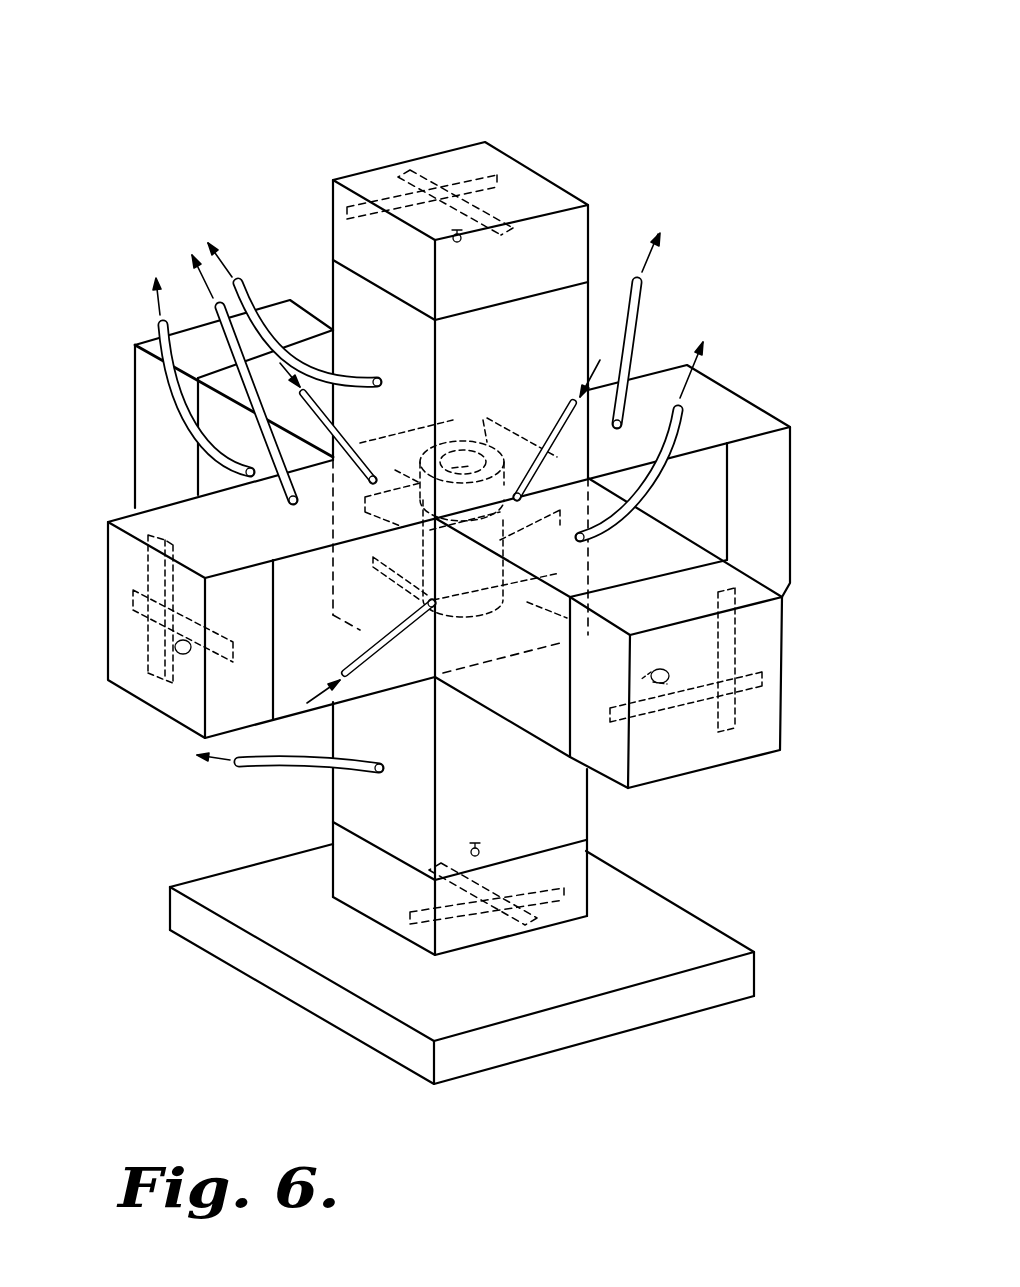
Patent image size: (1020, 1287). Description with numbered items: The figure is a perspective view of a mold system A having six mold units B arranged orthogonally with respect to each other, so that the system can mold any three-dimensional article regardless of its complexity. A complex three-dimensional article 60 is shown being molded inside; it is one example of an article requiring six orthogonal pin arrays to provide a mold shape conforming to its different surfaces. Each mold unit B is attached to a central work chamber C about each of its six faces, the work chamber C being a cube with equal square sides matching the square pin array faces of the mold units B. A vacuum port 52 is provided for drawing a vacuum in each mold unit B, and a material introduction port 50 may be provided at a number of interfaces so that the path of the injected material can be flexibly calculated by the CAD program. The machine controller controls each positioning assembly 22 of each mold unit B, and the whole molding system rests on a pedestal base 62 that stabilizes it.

The positioning assembly 22 is at (157, 678).
The material introduction port 50 is at (357, 455).
The vacuum port 52 is at (183, 375).
The three-dimensional article 60 is at (497, 458).
The pedestal base 62 is at (701, 916).
The mold system A is at (717, 160).
The mold unit B is at (560, 177).
The work chamber C is at (478, 669).